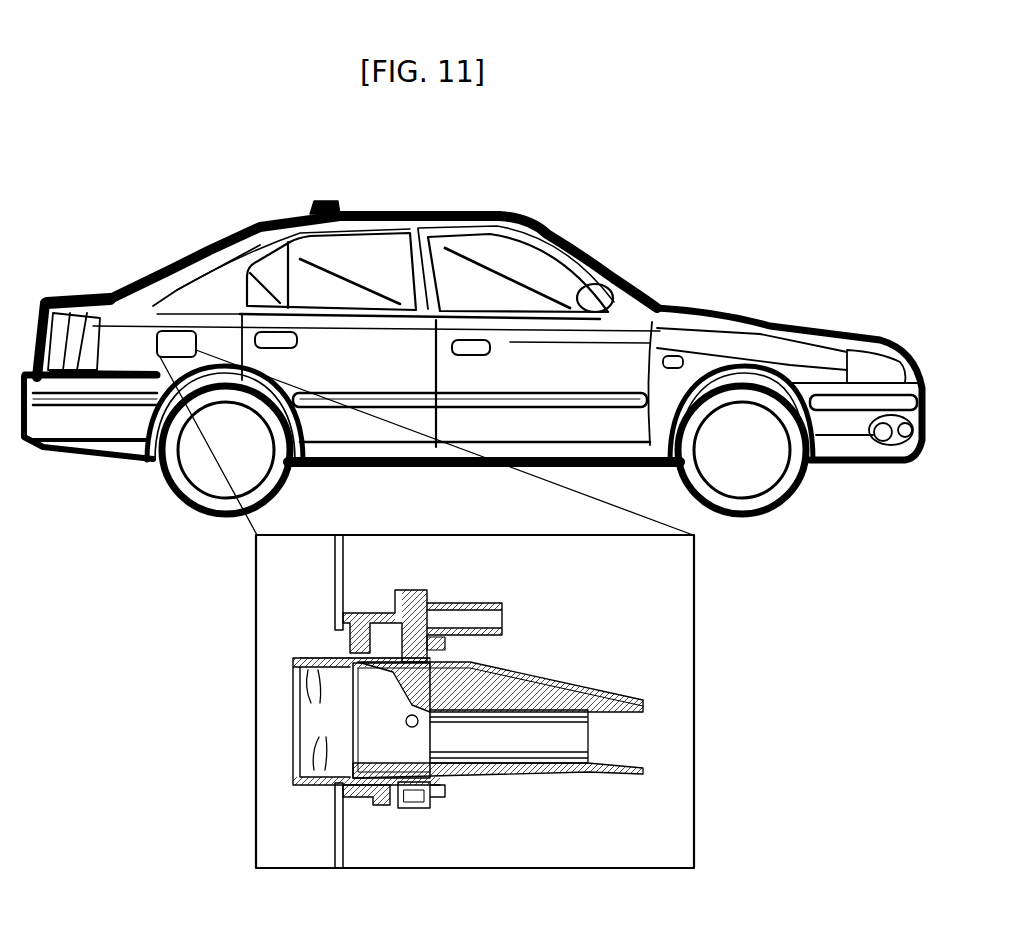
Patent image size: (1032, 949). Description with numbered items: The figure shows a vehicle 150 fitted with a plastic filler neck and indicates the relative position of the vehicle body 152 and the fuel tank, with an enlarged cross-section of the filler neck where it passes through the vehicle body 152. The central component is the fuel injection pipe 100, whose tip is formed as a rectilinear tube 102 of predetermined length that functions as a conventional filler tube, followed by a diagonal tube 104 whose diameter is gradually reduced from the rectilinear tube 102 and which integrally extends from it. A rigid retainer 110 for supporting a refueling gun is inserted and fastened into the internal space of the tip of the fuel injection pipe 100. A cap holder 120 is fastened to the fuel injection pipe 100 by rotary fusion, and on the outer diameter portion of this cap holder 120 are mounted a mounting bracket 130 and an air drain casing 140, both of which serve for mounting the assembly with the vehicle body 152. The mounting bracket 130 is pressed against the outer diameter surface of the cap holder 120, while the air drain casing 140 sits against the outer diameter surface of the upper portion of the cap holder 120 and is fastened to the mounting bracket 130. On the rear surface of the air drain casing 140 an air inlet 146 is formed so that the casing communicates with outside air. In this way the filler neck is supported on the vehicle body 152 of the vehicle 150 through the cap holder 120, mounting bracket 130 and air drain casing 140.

The vehicle 150 is at (532, 222).
The vehicle body 152 is at (178, 307).
The fuel injection pipe 100 is at (500, 780).
The rectilinear tube 102 is at (380, 786).
The diagonal tube 104 is at (500, 673).
The retainer 110 is at (360, 750).
The cap holder 120 is at (315, 655).
The mounting bracket 130 is at (415, 800).
The air drain casing 140 is at (372, 615).
The air inlet 146 is at (485, 603).